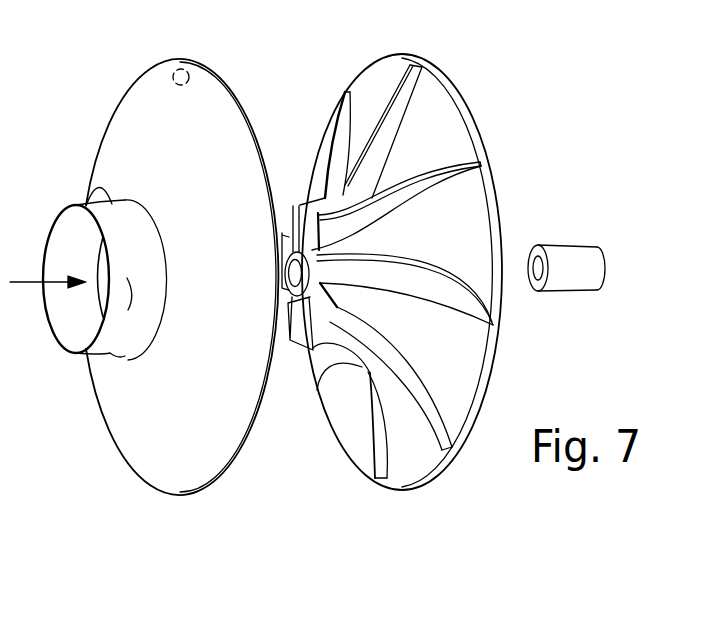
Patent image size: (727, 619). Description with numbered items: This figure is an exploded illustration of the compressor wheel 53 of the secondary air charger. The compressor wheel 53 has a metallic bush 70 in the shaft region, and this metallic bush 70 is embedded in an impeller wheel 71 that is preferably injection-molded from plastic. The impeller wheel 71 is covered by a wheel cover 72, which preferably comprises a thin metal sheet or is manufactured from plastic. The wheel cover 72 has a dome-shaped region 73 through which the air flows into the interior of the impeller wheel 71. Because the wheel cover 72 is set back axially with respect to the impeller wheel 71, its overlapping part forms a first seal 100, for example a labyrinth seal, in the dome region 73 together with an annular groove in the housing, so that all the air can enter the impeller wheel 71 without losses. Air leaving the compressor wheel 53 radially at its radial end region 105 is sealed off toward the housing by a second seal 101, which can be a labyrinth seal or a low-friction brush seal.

The compressor wheel 53 is at (513, 94).
The metallic bush 70 is at (573, 257).
The impeller wheel 71 is at (412, 466).
The wheel cover 72 is at (175, 275).
The dome-shaped region 73 is at (128, 298).
The first seal 100 is at (100, 187).
The second seal 101 is at (163, 63).
The radial end region 105 is at (227, 148).